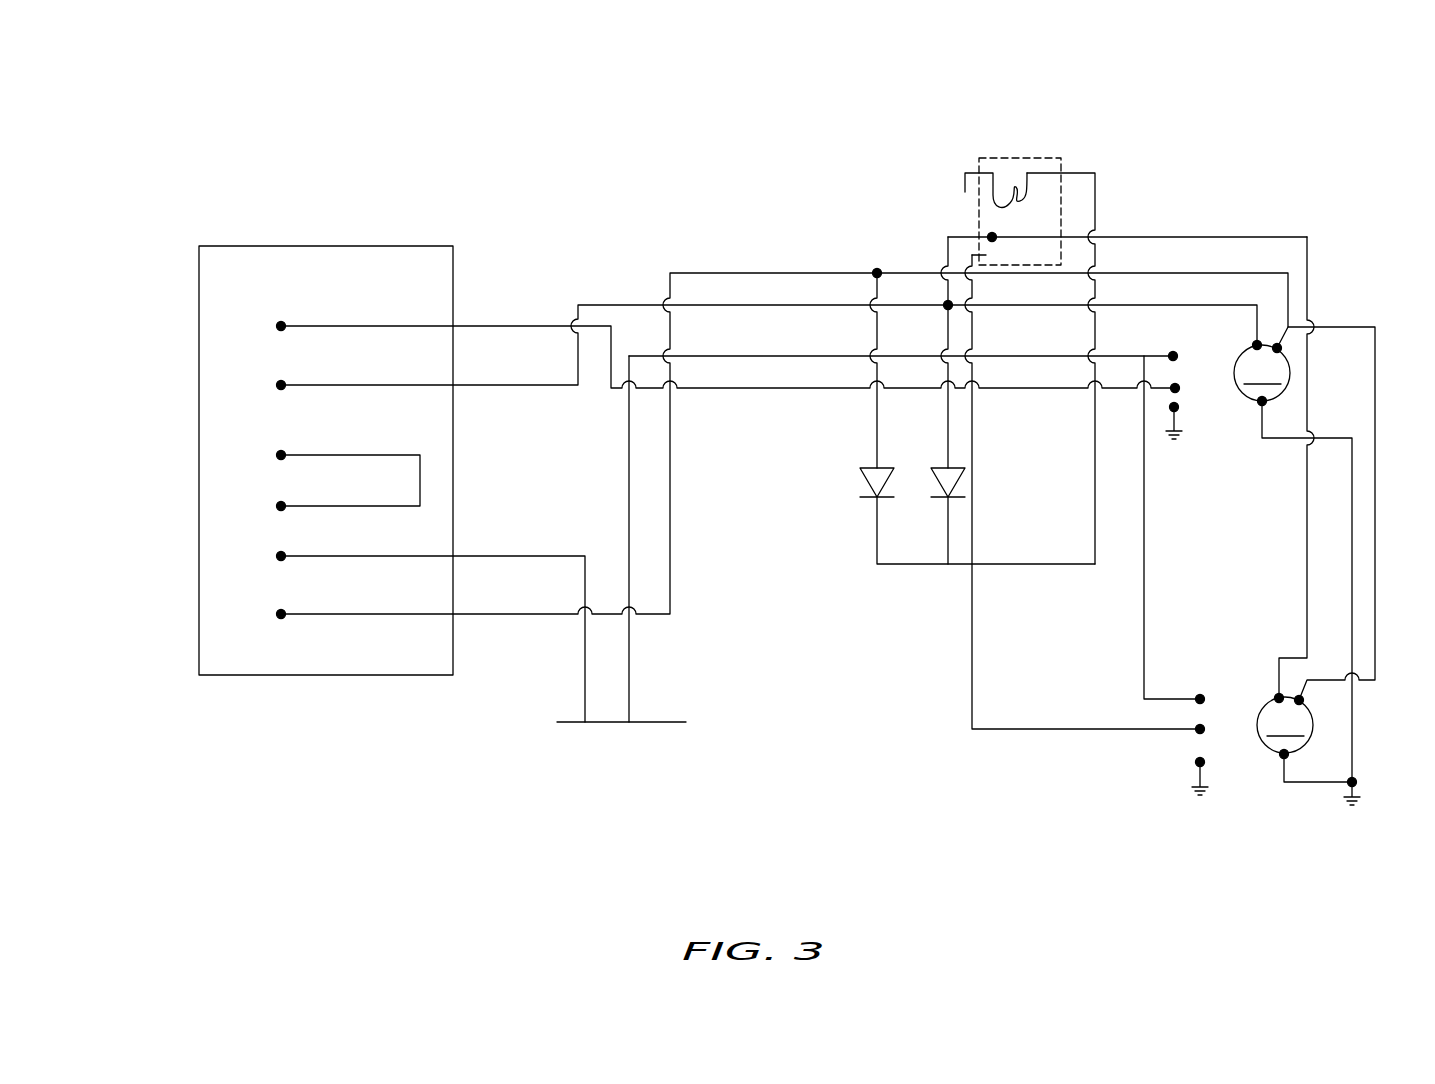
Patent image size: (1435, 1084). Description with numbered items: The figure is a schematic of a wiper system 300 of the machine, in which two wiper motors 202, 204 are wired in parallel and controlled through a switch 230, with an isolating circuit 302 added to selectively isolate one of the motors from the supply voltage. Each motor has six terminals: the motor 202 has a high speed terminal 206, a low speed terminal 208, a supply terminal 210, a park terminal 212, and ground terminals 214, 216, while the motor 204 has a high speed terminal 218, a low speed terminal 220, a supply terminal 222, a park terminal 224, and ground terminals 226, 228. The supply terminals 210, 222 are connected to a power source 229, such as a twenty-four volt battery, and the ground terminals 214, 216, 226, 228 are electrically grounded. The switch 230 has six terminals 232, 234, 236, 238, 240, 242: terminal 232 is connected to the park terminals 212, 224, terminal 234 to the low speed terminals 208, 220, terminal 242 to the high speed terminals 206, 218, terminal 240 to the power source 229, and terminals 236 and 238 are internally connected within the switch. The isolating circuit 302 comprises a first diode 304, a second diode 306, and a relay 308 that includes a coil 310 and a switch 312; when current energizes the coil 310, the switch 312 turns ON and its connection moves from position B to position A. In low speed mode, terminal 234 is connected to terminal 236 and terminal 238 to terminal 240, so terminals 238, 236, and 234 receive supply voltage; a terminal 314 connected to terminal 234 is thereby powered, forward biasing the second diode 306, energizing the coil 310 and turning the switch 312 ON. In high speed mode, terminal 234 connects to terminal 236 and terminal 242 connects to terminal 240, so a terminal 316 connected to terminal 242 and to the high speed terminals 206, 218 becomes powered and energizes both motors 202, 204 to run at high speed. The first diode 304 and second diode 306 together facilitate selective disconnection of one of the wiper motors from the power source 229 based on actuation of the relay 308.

The wiper system 300 is at (1278, 140).
The switch 230 is at (337, 246).
The terminal 232 is at (281, 326).
The terminal 234 is at (281, 385).
The terminal 236 is at (281, 455).
The terminal 238 is at (281, 506).
The terminal 240 is at (281, 556).
The terminal 242 is at (281, 614).
The power source 229 is at (657, 722).
The isolating circuit 302 is at (903, 173).
The first diode 304 is at (870, 480).
The second diode 306 is at (958, 480).
The relay 308 is at (1038, 158).
The coil 310 is at (1003, 186).
The switch 312 is at (993, 255).
The terminal 314 is at (946, 304).
The terminal 316 is at (877, 269).
The motor 202 is at (1262, 373).
The motor 204 is at (1285, 725).
The high speed terminal 206 is at (1280, 347).
The low speed terminal 208 is at (1257, 345).
The supply terminal 210 is at (1173, 352).
The park terminal 212 is at (1175, 392).
The ground terminal 214 is at (1180, 412).
The ground terminal 216 is at (1268, 400).
The high speed terminal 218 is at (1302, 698).
The low speed terminal 220 is at (1279, 695).
The supply terminal 222 is at (1200, 697).
The park terminal 224 is at (1199, 726).
The ground terminal 226 is at (1197, 762).
The ground terminal 228 is at (1288, 756).